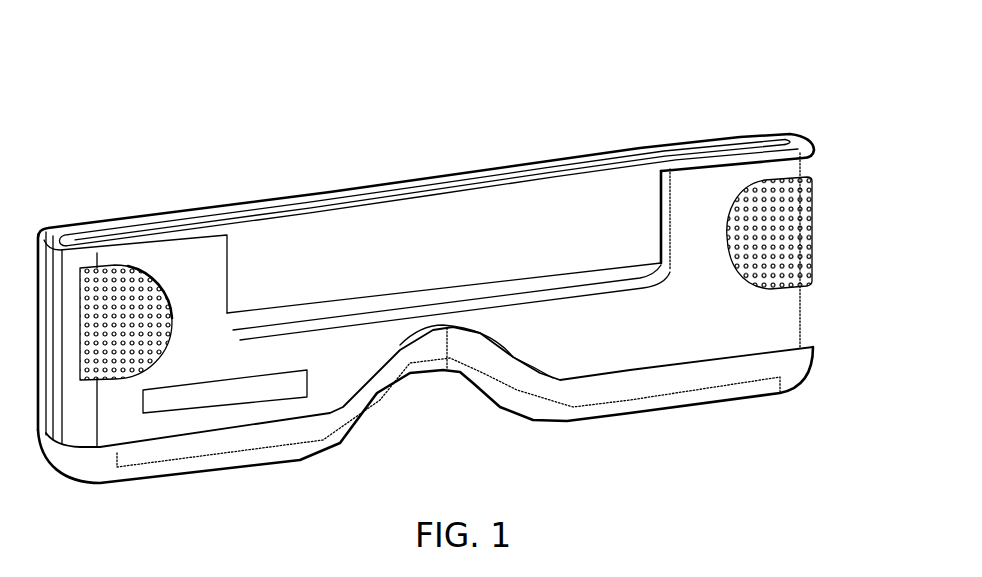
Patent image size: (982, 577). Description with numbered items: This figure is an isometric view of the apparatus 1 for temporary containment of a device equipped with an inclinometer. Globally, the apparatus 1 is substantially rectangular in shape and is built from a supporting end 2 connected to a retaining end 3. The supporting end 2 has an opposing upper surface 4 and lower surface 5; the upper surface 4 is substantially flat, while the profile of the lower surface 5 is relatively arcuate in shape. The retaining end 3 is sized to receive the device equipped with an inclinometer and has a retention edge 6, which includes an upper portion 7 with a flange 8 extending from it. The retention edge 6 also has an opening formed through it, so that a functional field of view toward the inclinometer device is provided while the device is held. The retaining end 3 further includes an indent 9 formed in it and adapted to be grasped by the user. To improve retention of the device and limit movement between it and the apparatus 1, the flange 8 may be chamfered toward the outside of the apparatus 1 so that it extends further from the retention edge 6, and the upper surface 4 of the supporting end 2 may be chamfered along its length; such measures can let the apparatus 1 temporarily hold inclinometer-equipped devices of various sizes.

The apparatus 1 is at (134, 91).
The supporting end 2 is at (831, 367).
The retaining end 3 is at (831, 238).
The upper surface 4 is at (393, 297).
The lower surface 5 is at (141, 484).
The retention edge 6 is at (692, 267).
The upper portion 7 is at (190, 257).
The flange 8 is at (122, 243).
The indent 9 is at (797, 217).